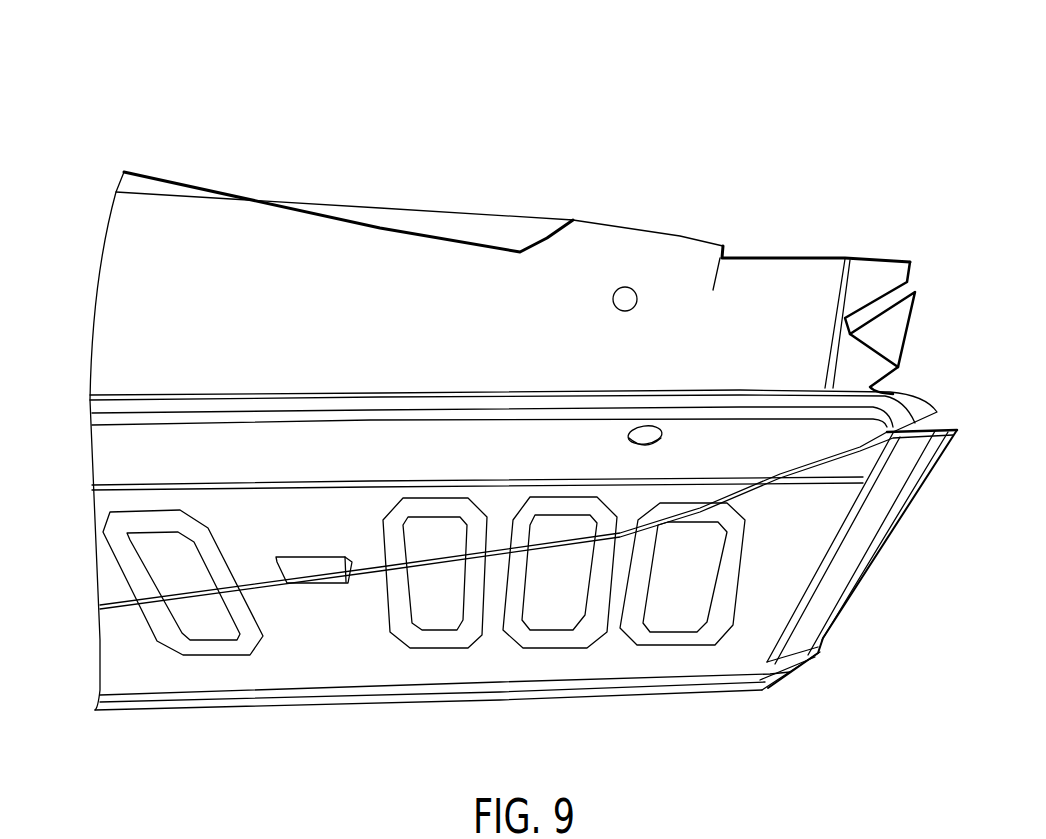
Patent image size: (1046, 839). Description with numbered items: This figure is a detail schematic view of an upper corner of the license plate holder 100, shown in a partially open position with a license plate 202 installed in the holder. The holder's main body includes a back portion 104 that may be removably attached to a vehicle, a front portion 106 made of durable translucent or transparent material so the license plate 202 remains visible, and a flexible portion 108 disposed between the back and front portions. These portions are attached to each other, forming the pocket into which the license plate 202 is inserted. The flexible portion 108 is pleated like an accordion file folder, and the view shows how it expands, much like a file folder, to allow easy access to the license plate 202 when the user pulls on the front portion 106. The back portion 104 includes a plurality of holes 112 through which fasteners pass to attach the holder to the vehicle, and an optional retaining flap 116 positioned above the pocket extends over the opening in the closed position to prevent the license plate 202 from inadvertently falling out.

The license plate holder 100 is at (212, 66).
The back portion 104 is at (780, 285).
The front portion 106 is at (714, 662).
The flexible portion 108 is at (893, 347).
The holes 112 is at (627, 297).
The retaining flap 116 is at (488, 222).
The license plate 202 is at (110, 458).